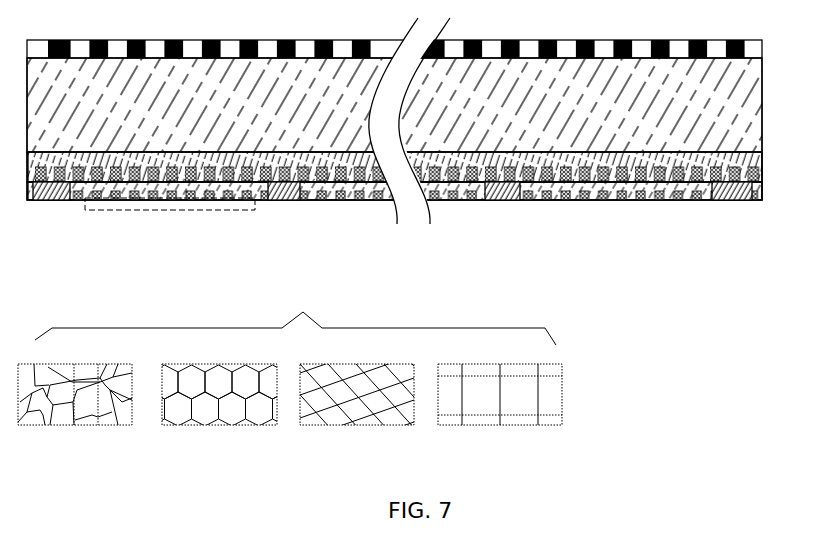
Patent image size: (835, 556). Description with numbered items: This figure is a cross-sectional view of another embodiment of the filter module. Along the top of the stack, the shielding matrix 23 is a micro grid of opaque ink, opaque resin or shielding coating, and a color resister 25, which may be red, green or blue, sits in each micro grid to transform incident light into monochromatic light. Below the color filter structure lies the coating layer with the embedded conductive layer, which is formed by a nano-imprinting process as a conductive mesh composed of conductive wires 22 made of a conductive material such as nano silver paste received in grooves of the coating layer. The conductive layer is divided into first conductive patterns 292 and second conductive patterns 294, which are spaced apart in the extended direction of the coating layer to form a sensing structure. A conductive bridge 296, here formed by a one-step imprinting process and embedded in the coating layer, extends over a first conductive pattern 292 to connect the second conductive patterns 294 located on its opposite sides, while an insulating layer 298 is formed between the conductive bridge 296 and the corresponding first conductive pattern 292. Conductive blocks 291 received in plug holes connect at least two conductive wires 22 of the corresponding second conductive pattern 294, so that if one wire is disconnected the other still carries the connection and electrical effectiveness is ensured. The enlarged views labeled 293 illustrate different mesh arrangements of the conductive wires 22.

The conductive wires 22 is at (87, 418).
The shielding matrix 23 is at (698, 41).
The color resister 25 is at (755, 53).
The conductive blocks 291 is at (232, 210).
The first conductive patterns 292 is at (394, 241).
The pattern region 293 is at (302, 378).
The second conductive patterns 294 is at (740, 168).
The conductive bridges 296 is at (135, 209).
The insulating layers 298 is at (628, 190).